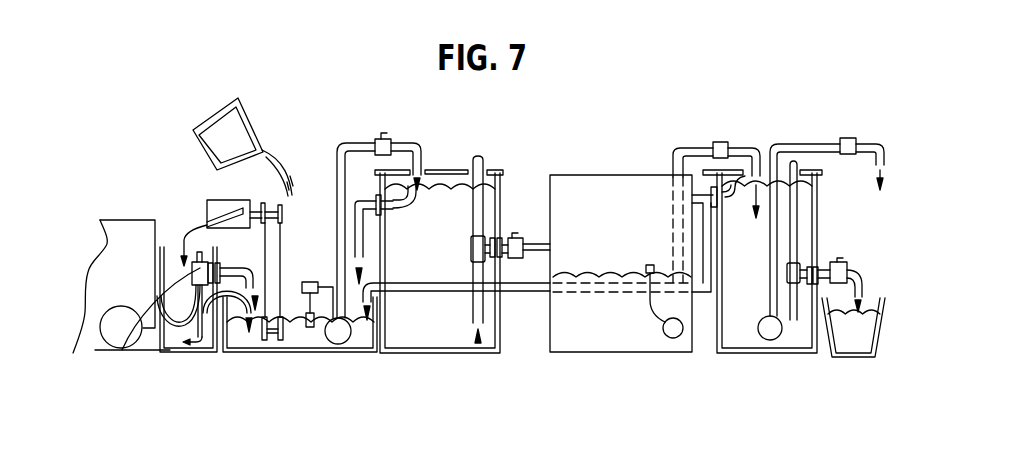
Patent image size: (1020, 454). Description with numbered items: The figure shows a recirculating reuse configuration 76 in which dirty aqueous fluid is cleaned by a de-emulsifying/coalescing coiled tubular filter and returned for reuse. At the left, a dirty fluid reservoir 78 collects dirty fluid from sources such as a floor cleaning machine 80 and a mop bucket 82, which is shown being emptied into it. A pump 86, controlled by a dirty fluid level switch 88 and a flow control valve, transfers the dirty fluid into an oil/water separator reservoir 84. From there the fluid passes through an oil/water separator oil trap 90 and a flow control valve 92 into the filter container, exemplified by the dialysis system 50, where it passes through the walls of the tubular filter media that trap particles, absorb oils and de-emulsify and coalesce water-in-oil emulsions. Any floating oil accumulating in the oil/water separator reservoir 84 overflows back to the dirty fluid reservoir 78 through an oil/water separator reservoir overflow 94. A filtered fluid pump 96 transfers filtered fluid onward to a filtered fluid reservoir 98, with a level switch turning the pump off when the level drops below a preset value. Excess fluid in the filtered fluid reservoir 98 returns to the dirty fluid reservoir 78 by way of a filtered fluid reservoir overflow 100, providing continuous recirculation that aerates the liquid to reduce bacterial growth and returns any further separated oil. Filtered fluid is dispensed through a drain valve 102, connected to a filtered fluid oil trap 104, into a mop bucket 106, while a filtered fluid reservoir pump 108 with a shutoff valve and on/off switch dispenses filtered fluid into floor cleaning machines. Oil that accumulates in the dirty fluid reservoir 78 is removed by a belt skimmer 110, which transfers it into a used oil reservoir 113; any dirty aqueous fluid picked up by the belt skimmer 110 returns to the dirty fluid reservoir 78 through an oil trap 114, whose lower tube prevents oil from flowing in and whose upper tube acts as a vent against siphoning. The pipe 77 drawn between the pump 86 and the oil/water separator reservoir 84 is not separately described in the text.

The dialysis system 50 is at (623, 332).
The recirculating reuse configuration 76 is at (388, 119).
The supply pipe 77 is at (391, 140).
The dirty fluid reservoir 78 is at (240, 342).
The floor cleaning machine 80 is at (75, 342).
The mop bucket 82 is at (215, 122).
The oil/water separator reservoir 84 is at (433, 340).
The pump 86 is at (340, 340).
The dirty fluid level switch 88 is at (300, 340).
The oil/water separator oil trap 90 is at (473, 237).
The flow control valve 92 is at (516, 240).
The oil/water separator reservoir overflow 94 is at (403, 190).
The filtered fluid pump 96 is at (665, 342).
The filtered fluid reservoir 98 is at (740, 342).
The filtered fluid reservoir overflow 100 is at (722, 187).
The drain valve 102 is at (843, 267).
The filtered fluid oil trap 104 is at (803, 340).
The mop bucket 106 is at (850, 345).
The filtered fluid reservoir pump 108 is at (778, 340).
The belt skimmer 110 is at (282, 237).
The used oil reservoir 113 is at (175, 352).
The oil trap 114 is at (127, 340).